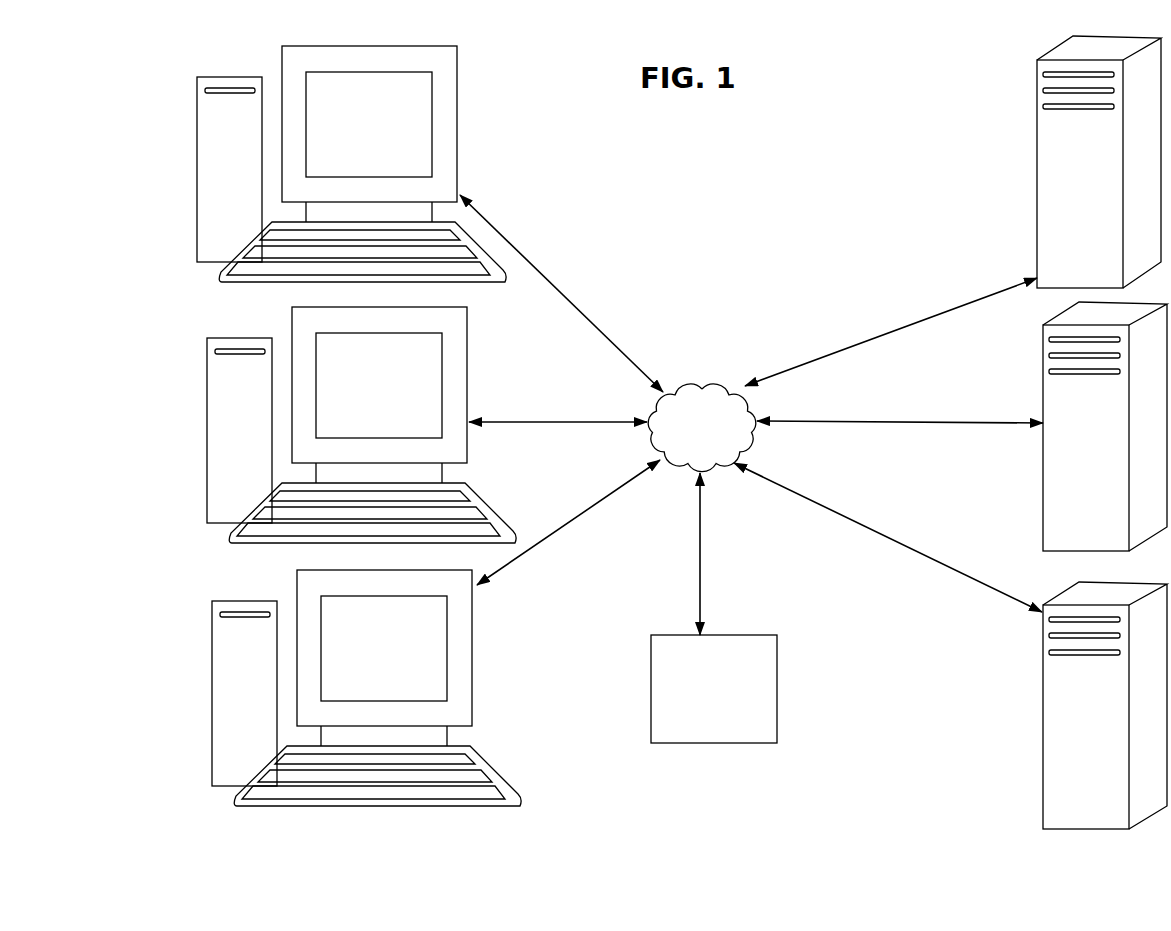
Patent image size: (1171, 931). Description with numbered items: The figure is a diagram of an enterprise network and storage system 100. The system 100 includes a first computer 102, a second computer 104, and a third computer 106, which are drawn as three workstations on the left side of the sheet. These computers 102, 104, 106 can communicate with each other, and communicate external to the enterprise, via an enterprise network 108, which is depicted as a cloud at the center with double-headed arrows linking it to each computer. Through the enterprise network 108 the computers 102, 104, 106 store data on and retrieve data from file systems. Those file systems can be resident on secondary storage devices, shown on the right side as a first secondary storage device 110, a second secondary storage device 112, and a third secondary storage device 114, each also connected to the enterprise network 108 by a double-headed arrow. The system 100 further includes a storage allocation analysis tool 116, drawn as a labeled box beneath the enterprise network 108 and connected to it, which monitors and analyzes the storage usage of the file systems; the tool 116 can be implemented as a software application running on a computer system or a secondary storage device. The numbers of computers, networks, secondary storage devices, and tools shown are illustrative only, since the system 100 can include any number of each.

The enterprise network and storage system 100 is at (687, 121).
The first computer 102 is at (215, 264).
The second computer 104 is at (348, 436).
The third computer 106 is at (342, 693).
The enterprise network 108 is at (668, 473).
The first secondary storage device 110 is at (1040, 85).
The second secondary storage device 112 is at (1045, 478).
The third secondary storage device 114 is at (1050, 722).
The storage allocation analysis tool 116 is at (700, 744).